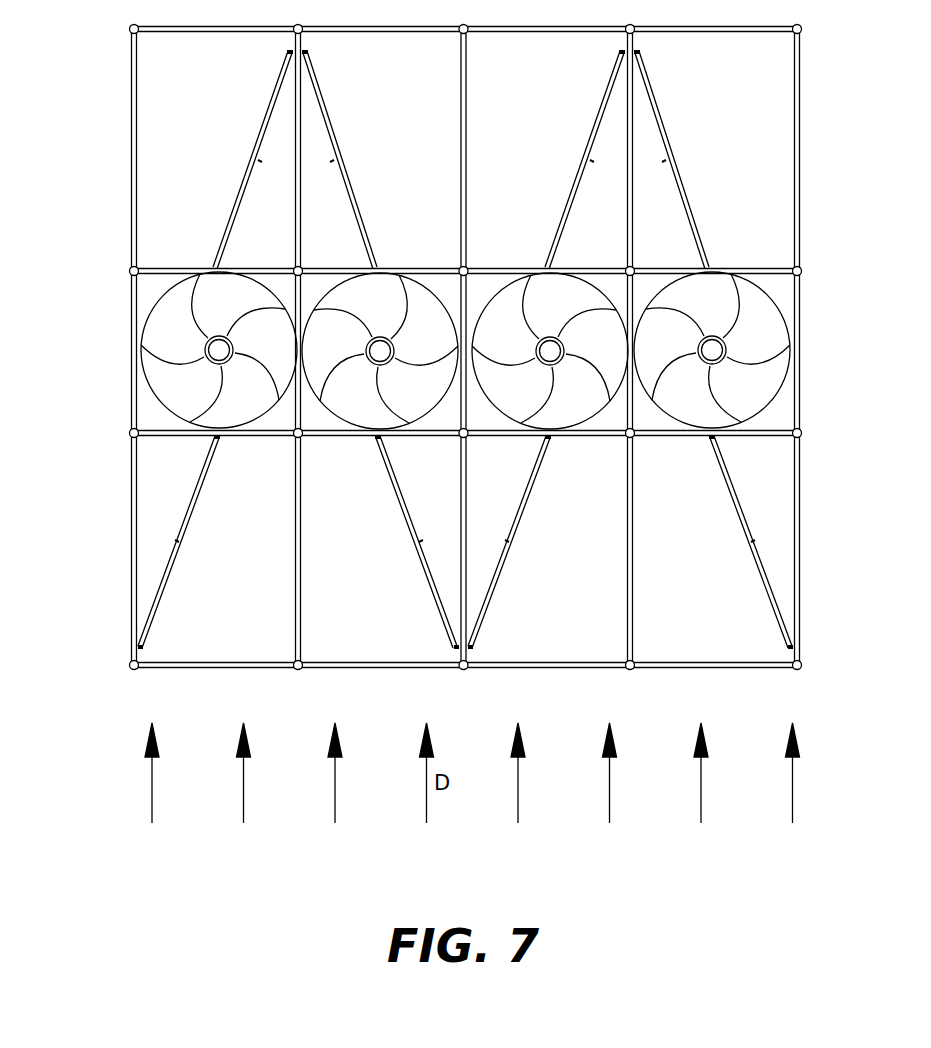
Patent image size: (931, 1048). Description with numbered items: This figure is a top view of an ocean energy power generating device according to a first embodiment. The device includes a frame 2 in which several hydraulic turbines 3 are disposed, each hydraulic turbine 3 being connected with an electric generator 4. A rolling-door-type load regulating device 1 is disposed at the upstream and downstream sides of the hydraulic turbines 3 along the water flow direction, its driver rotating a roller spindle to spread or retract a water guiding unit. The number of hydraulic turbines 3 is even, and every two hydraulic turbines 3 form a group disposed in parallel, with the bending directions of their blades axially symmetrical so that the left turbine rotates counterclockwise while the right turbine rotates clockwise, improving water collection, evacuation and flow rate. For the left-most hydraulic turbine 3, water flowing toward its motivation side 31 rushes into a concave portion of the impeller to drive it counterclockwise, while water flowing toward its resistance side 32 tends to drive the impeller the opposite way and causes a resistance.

The rolling-door-type load regulating device 1 is at (177, 533).
The frame 2 is at (133, 133).
The hydraulic turbine 3 is at (417, 391).
The electric generator 4 is at (205, 351).
The motivation side 31 is at (275, 411).
The resistance side 32 is at (160, 411).